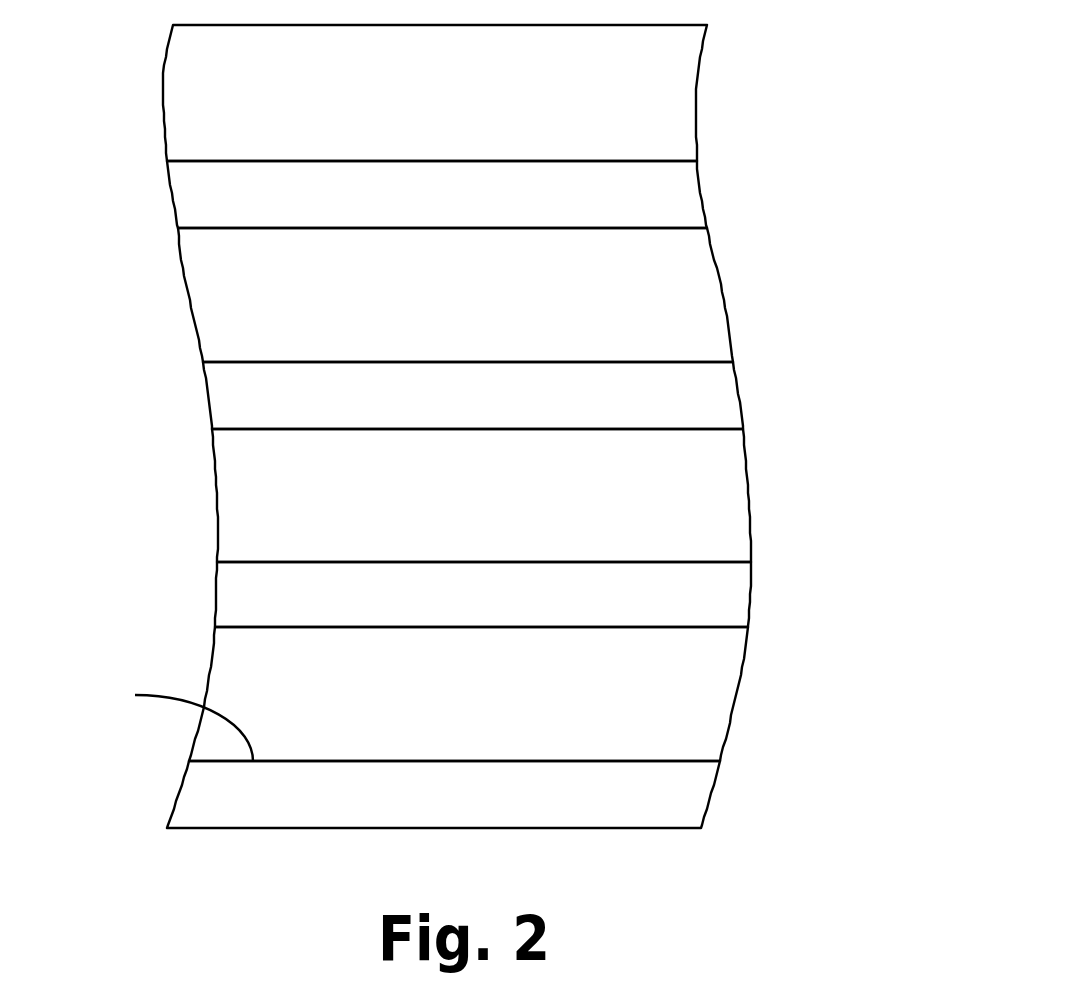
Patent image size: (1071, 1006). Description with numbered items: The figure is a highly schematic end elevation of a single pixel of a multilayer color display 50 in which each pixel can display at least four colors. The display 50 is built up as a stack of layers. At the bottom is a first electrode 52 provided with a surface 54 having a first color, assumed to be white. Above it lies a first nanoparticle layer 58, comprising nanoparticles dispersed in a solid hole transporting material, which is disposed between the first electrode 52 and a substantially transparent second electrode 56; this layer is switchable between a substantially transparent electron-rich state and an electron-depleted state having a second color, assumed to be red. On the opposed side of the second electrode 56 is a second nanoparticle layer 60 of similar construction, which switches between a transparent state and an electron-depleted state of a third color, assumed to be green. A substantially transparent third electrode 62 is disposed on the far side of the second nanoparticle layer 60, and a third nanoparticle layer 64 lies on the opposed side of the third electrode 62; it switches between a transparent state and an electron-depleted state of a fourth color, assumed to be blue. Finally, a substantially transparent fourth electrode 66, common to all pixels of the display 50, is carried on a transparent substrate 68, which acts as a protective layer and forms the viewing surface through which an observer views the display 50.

The color display 50 is at (491, 426).
The first electrode 52 is at (233, 796).
The surface 54 is at (166, 715).
The second electrode 56 is at (265, 593).
The first nanoparticle layer 58 is at (253, 678).
The second nanoparticle layer 60 is at (269, 512).
The third electrode 62 is at (252, 397).
The third nanoparticle layer 64 is at (233, 296).
The fourth electrode 66 is at (213, 211).
The transparent substrate 68 is at (216, 95).